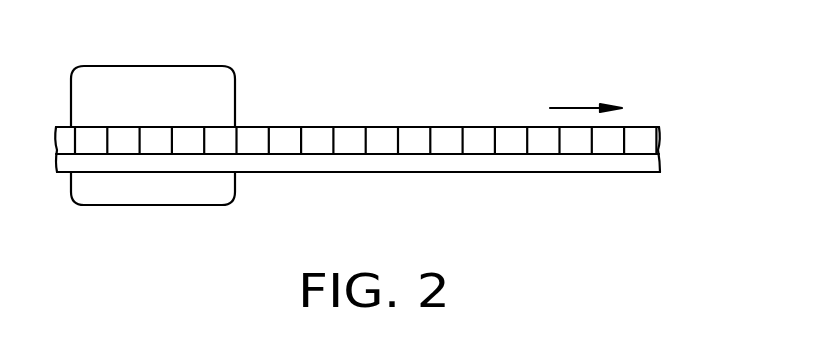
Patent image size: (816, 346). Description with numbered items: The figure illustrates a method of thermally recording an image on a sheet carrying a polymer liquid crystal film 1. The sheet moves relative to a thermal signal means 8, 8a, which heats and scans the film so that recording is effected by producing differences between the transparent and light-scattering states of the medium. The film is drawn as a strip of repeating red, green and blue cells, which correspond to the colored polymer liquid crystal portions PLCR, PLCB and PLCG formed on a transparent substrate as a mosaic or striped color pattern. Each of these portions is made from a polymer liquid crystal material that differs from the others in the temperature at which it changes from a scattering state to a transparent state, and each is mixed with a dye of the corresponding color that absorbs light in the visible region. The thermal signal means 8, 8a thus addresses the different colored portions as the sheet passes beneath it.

The polymer liquid crystal film 1 is at (401, 131).
The thermal signal means 8 is at (234, 77).
The thermal signal means 8a is at (235, 190).
The red polymer liquid crystal portion PLCR is at (467, 154).
The blue polymer liquid crystal portion PLCB is at (553, 154).
The green polymer liquid crystal portion PLCG is at (618, 154).